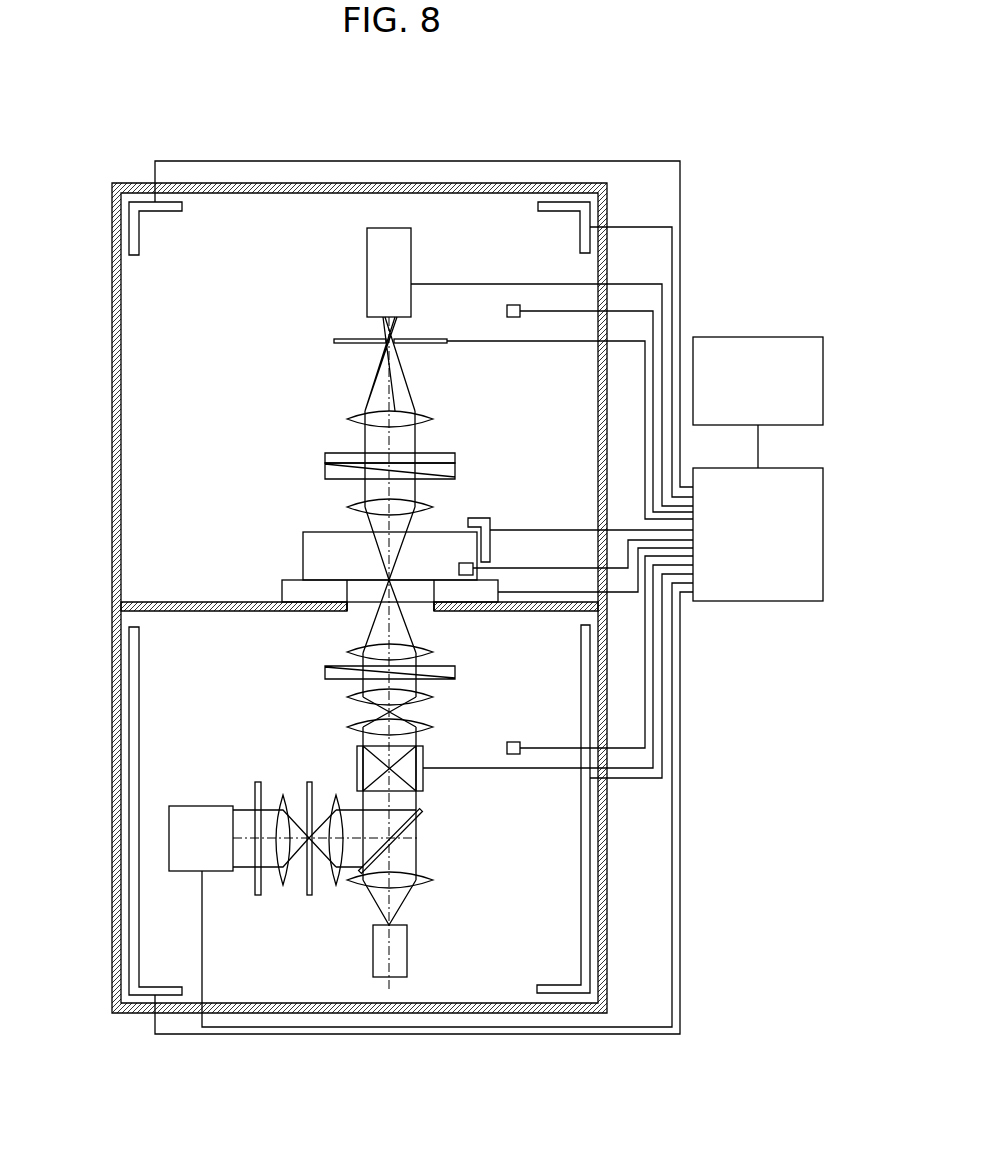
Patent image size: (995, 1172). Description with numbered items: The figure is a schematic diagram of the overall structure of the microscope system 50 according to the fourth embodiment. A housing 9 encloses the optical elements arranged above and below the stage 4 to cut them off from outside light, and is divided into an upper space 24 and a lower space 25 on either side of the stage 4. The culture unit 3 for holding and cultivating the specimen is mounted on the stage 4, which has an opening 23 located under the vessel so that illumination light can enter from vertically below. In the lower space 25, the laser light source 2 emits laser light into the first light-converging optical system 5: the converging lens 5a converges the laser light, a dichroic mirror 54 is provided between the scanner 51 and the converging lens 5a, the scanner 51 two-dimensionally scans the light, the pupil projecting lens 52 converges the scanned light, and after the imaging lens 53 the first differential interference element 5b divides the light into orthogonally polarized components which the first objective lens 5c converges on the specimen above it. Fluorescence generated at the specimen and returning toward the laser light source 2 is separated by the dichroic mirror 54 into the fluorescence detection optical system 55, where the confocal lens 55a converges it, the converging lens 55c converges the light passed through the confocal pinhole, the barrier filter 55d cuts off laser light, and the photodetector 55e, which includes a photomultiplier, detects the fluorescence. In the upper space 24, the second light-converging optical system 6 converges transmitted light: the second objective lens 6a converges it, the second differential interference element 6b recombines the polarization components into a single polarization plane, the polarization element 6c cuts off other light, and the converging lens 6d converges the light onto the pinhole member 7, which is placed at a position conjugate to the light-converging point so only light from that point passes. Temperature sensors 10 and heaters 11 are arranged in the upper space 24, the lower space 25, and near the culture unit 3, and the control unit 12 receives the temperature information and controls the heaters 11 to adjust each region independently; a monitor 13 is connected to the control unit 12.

The microscope system 50 is at (690, 118).
The housing 9 is at (113, 385).
The upper space 24 is at (140, 318).
The lower space 25 is at (165, 690).
The pinhole member 7 is at (349, 339).
The temperature sensors 10 is at (507, 311).
The heaters 11 is at (160, 213).
The second light-converging optical system 6 is at (394, 445).
The second objective lens 6a is at (433, 507).
The second differential interference element 6b is at (456, 472).
The polarization element 6c is at (456, 455).
The converging lens 6d is at (432, 417).
The culture unit 3 is at (305, 545).
The stage 4 is at (282, 589).
The opening 23 is at (427, 602).
The monitor 13 is at (752, 337).
The control unit 12 is at (752, 603).
The first light-converging optical system 5 is at (476, 729).
The converging lens 5a is at (433, 880).
The first differential interference element 5b is at (325, 672).
The first objective lens 5c is at (347, 652).
The imaging lens 53 is at (347, 697).
The pupil projecting lens 52 is at (347, 727).
The scanner 51 is at (425, 780).
The dichroic mirror 54 is at (422, 812).
The laser light source 2 is at (407, 953).
The fluorescence detection optical system 55 is at (426, 805).
The confocal lens 55a is at (336, 885).
The converging lens 55c is at (283, 895).
The barrier filter 55d is at (258, 895).
The photodetector 55e is at (190, 875).